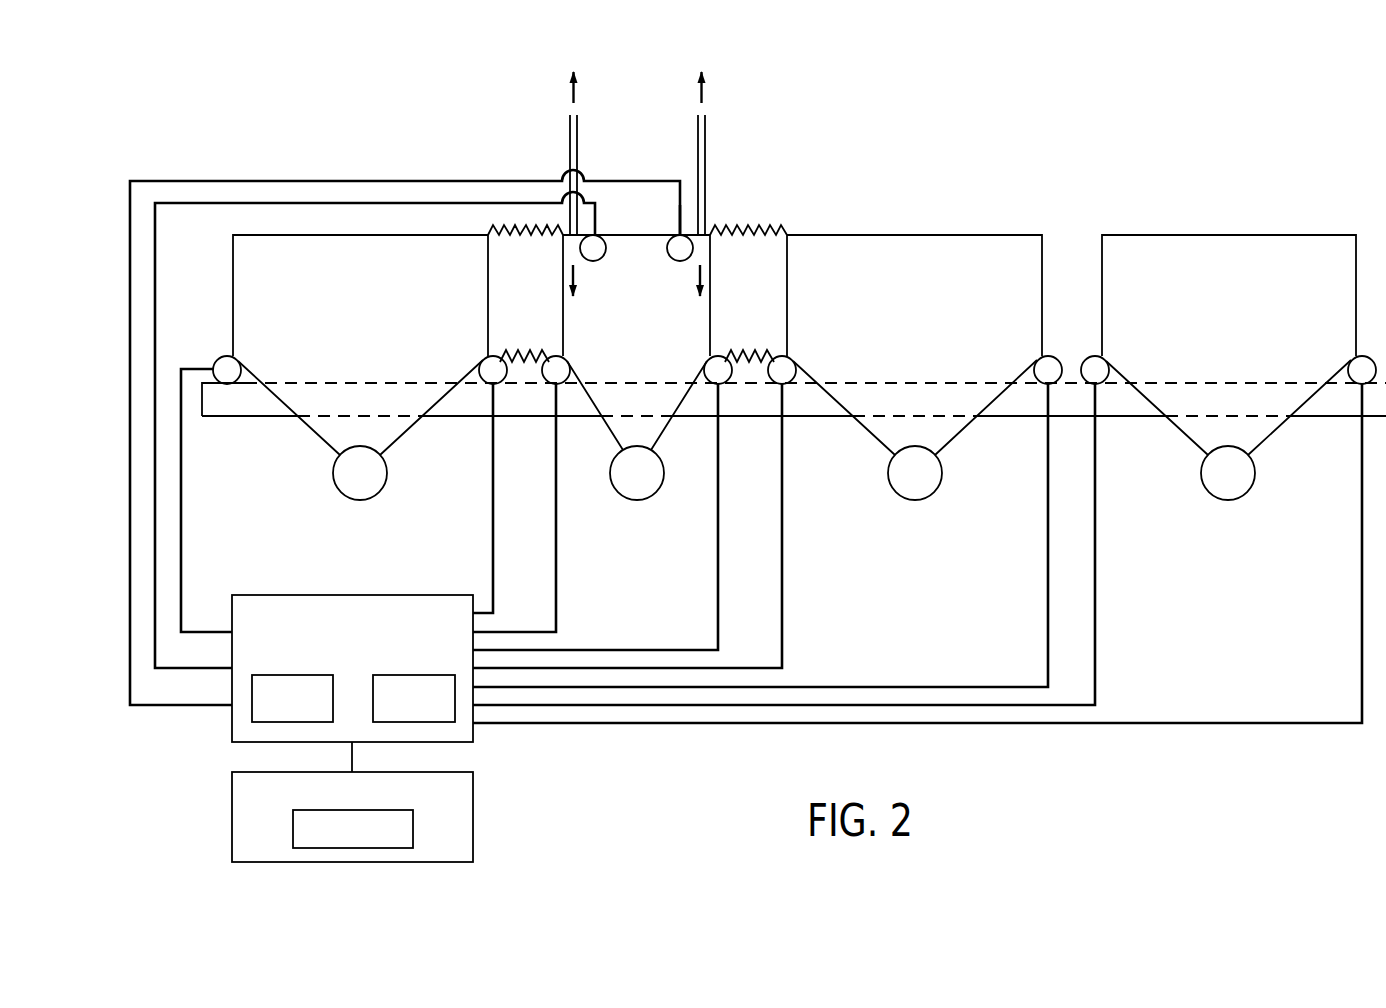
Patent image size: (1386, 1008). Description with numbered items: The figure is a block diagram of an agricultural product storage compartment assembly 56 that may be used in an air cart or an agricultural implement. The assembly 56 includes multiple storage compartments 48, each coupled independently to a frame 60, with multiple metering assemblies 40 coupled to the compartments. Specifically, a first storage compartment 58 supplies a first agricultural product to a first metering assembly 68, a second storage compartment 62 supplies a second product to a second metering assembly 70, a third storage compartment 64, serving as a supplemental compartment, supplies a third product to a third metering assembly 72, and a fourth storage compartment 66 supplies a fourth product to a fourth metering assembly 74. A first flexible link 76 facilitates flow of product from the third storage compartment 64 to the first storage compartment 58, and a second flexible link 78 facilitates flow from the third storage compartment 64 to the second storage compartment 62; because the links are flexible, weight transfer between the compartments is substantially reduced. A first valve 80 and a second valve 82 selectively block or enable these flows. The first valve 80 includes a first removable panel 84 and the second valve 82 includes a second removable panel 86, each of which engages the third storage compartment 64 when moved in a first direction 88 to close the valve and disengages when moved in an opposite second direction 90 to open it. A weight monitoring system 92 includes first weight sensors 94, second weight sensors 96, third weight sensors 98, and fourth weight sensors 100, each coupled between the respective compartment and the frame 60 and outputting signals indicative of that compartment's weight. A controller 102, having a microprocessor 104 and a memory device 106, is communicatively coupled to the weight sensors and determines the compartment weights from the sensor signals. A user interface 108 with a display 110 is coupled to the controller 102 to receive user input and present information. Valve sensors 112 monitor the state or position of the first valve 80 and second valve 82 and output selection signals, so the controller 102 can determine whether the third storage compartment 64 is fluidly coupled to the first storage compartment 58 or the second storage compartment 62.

The metering assembly 40 is at (304, 511).
The storage compartment 48 is at (360, 164).
The agricultural product storage compartment assembly 56 is at (972, 123).
The first storage compartment 58 is at (233, 305).
The frame 60 is at (1071, 400).
The second storage compartment 62 is at (930, 235).
The third storage compartment 64 is at (629, 235).
The fourth storage compartment 66 is at (1245, 235).
The first metering assembly 68 is at (366, 501).
The second metering assembly 70 is at (921, 501).
The third metering assembly 72 is at (643, 500).
The fourth metering assembly 74 is at (1234, 501).
The first flexible link 76 is at (521, 350).
The second flexible link 78 is at (750, 350).
The first valve 80 is at (547, 165).
The second valve 82 is at (718, 209).
The first removable panel 84 is at (578, 145).
The second removable panel 86 is at (707, 143).
The first direction 88 is at (582, 283).
The second direction 90 is at (571, 82).
The weight monitoring system 92 is at (106, 402).
The first weight sensor 94 is at (247, 383).
The second weight sensor 96 is at (797, 380).
The third weight sensor 98 is at (537, 380).
The fourth weight sensor 100 is at (1112, 380).
The controller 102 is at (437, 595).
The microprocessor 104 is at (305, 675).
The memory device 106 is at (390, 675).
The user interface 108 is at (475, 817).
The display 110 is at (293, 830).
The valve sensor 112 is at (606, 250).